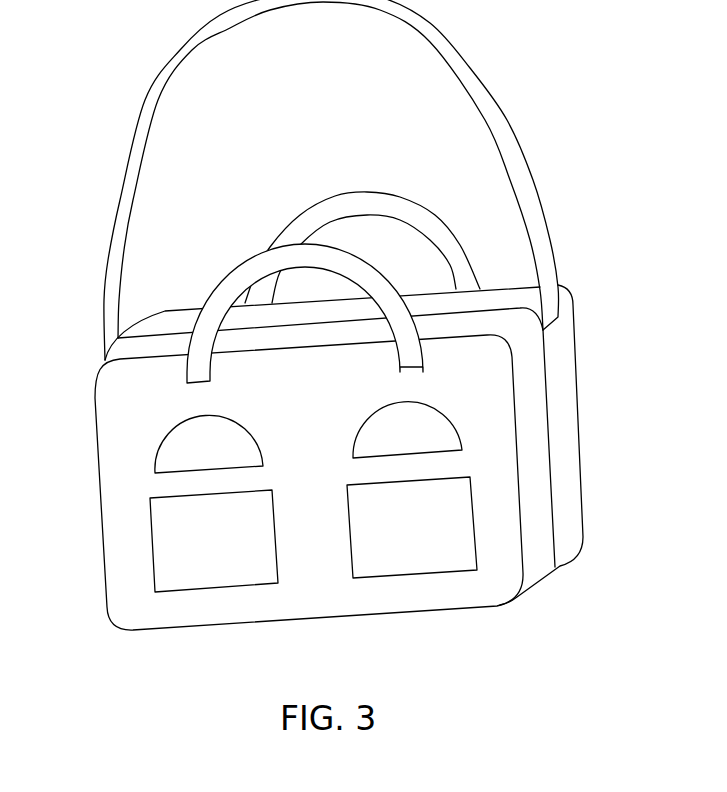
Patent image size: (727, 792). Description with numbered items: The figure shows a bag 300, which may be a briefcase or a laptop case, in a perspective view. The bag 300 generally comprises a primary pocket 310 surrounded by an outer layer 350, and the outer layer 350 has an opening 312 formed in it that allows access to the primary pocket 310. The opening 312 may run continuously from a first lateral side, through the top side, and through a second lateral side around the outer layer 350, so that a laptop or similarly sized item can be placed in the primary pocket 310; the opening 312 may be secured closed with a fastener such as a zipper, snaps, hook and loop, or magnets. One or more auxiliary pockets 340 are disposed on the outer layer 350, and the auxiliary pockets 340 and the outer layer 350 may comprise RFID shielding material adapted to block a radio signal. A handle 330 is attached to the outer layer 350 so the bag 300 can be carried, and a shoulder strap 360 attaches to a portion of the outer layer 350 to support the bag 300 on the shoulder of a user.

The bag 300 is at (66, 51).
The primary pocket 310 is at (491, 308).
The opening 312 is at (548, 420).
The handle 330 is at (334, 422).
The auxiliary pocket 340 is at (172, 453).
The outer layer 350 is at (110, 442).
The shoulder strap 360 is at (128, 193).